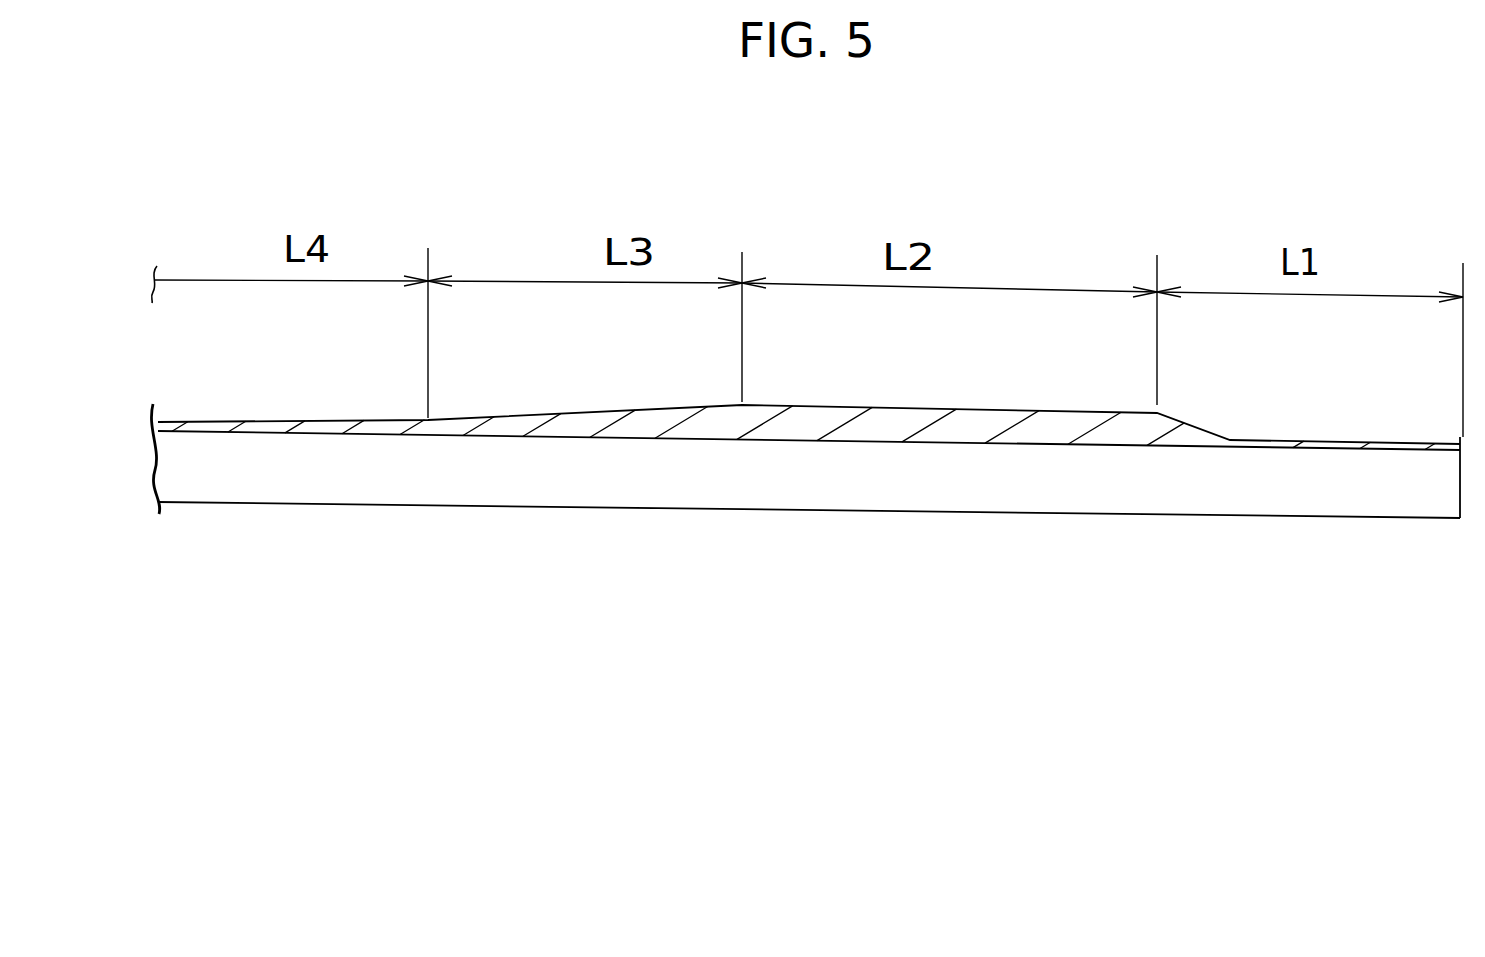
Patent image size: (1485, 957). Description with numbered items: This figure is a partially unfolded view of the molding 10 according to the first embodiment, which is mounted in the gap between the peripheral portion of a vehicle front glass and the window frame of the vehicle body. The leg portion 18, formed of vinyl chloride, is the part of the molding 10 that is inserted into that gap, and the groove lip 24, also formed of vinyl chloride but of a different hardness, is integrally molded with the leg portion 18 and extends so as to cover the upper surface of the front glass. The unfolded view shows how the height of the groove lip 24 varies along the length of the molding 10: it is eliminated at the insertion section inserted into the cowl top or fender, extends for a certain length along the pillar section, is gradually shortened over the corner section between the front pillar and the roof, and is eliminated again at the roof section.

The molding 10 is at (805, 465).
The leg portion 18 is at (395, 487).
The groove lip 24 is at (915, 410).